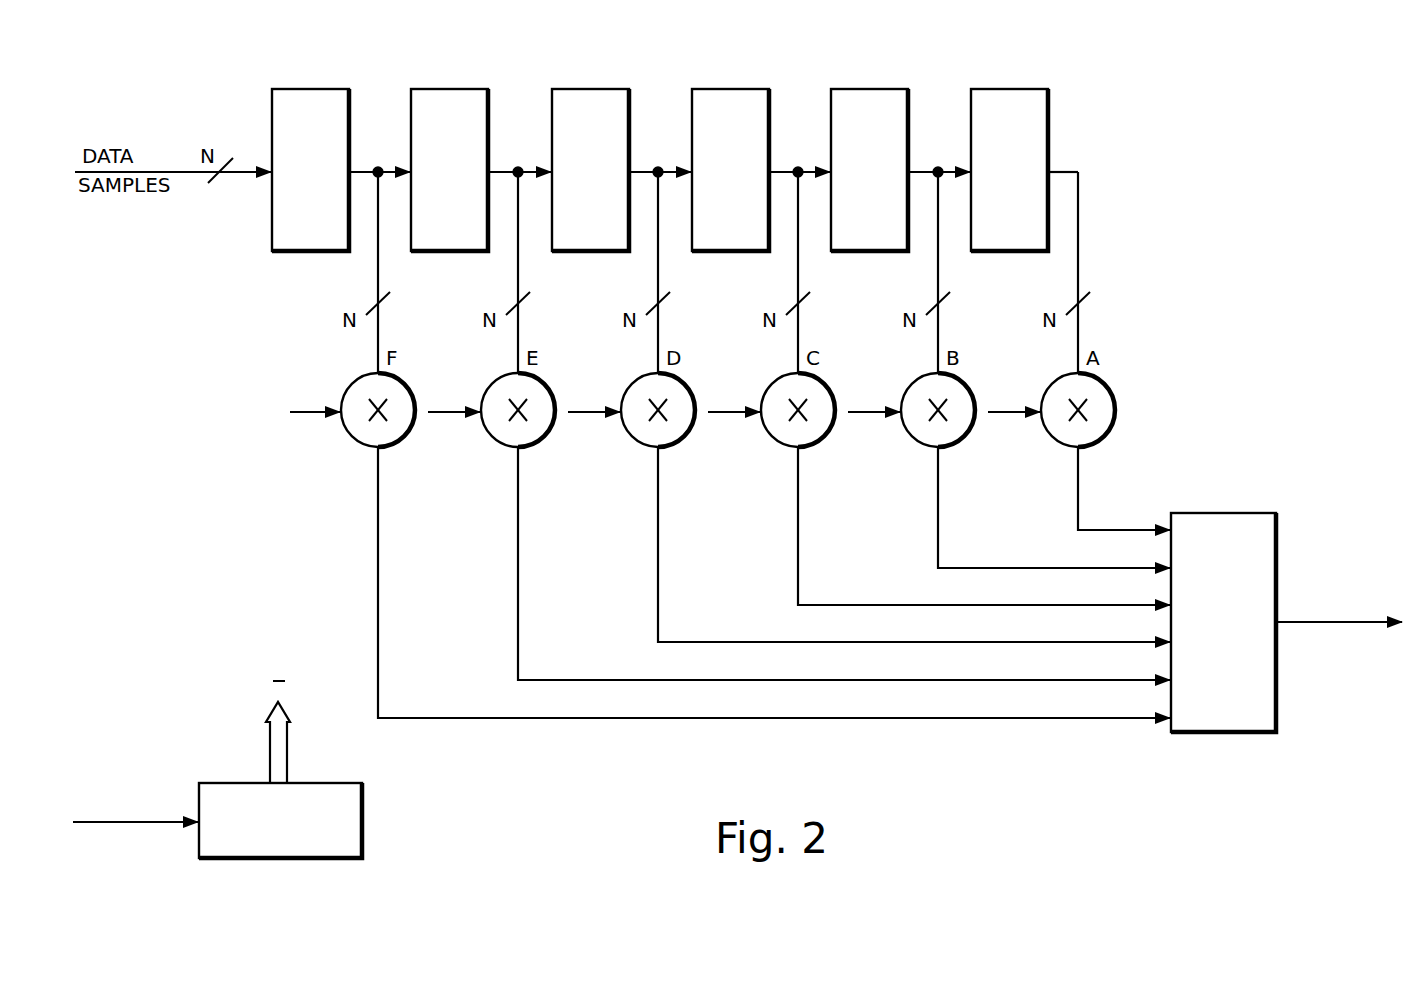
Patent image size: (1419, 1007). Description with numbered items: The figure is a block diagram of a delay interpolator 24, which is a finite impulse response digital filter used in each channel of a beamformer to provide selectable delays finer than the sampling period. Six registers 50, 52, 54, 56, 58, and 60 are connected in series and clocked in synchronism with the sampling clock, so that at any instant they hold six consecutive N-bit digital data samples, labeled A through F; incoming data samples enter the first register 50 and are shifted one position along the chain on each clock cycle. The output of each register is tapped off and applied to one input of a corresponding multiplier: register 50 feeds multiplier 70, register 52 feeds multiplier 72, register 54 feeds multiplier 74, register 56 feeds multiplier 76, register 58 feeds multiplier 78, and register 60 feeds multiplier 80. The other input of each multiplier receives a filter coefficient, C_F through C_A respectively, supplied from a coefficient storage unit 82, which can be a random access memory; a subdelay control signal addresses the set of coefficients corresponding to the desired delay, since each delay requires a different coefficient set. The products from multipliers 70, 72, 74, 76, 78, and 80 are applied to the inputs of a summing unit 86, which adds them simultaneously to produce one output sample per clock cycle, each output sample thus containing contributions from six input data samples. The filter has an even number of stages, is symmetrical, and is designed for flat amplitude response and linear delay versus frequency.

The delay interpolator 24 is at (663, 56).
The register 50 is at (338, 89).
The register 52 is at (455, 89).
The register 54 is at (600, 89).
The register 56 is at (731, 89).
The register 58 is at (860, 89).
The register 60 is at (1002, 88).
The multiplier 70 is at (349, 389).
The multiplier 72 is at (489, 389).
The multiplier 74 is at (629, 389).
The multiplier 76 is at (769, 389).
The multiplier 78 is at (909, 389).
The multiplier 80 is at (1049, 389).
The coefficient storage unit 82 is at (365, 823).
The summing unit 86 is at (1230, 513).